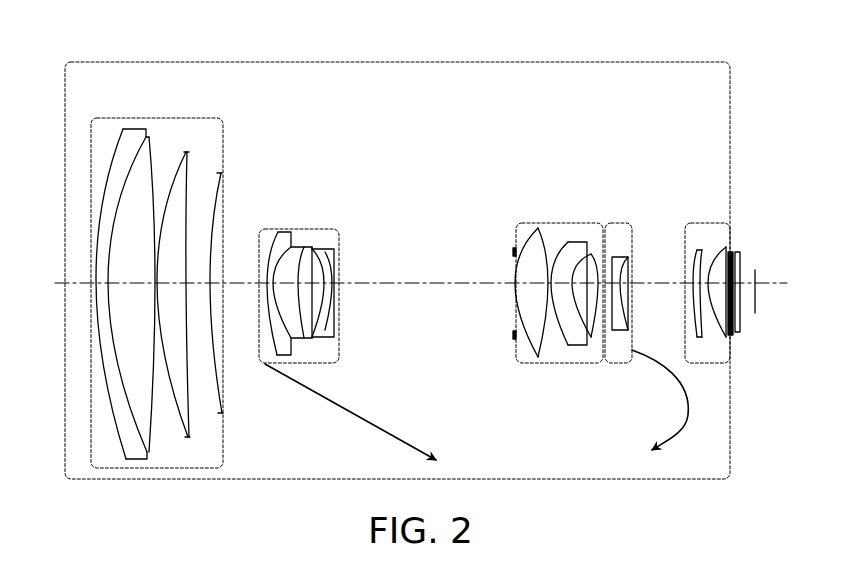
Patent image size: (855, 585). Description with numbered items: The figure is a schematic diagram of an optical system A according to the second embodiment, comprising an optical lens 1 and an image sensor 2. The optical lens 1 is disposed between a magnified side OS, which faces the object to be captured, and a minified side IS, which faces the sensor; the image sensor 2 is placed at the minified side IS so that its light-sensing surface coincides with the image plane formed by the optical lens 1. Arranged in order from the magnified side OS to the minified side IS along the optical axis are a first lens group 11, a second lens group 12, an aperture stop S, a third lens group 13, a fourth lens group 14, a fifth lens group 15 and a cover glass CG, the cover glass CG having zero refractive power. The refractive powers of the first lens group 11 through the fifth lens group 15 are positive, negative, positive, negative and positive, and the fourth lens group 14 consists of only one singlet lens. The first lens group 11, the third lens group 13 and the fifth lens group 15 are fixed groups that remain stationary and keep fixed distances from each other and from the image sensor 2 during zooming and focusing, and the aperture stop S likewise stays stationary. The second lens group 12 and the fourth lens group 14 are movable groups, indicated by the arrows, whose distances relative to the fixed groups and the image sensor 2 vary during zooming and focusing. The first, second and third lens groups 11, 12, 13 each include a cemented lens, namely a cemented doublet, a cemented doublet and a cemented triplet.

The optical lens 1 is at (290, 62).
The image sensor 2 is at (756, 298).
The first lens group 11 is at (222, 118).
The second lens group 12 is at (283, 230).
The third lens group 13 is at (548, 223).
The fourth lens group 14 is at (620, 223).
The fifth lens group 15 is at (688, 223).
The optical system A is at (740, 51).
The aperture stop S is at (515, 247).
The cover glass CG is at (731, 252).
The magnified side OS is at (48, 276).
The minified side IS is at (797, 284).